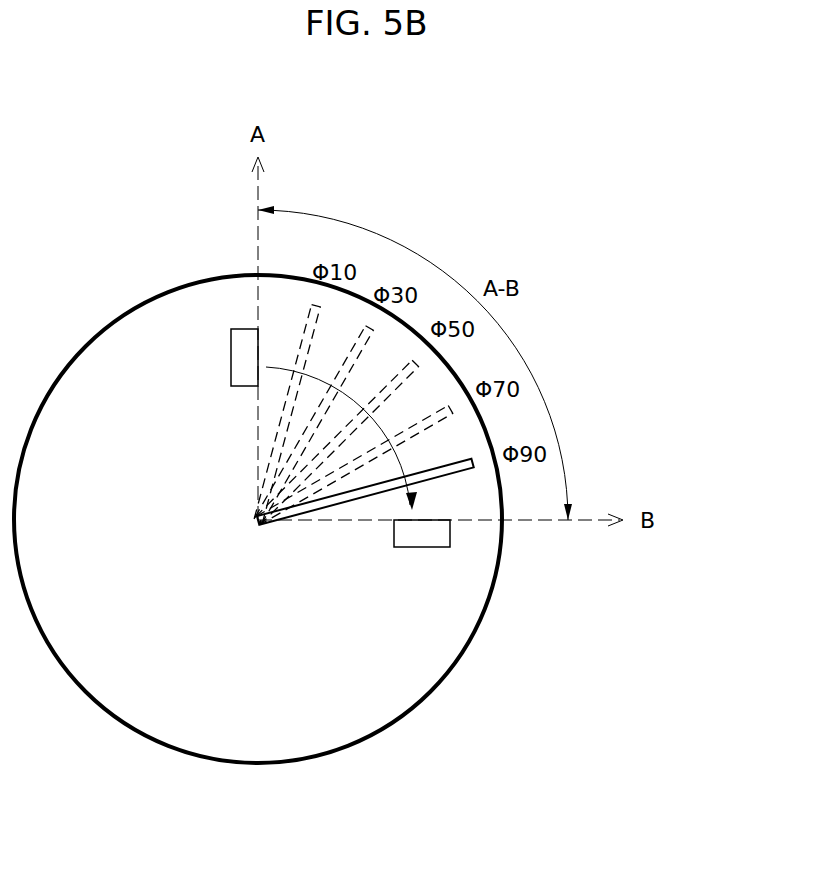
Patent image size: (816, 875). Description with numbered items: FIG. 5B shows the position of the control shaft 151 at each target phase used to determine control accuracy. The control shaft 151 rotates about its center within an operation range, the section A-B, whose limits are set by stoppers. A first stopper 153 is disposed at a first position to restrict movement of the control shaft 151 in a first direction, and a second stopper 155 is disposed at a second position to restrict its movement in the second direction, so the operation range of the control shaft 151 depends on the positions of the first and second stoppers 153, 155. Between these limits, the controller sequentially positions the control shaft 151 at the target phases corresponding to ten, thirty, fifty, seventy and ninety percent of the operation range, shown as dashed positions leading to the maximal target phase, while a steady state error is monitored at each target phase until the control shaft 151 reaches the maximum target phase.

The control shaft 151 is at (325, 510).
The first stopper 153 is at (231, 345).
The second stopper 155 is at (423, 548).